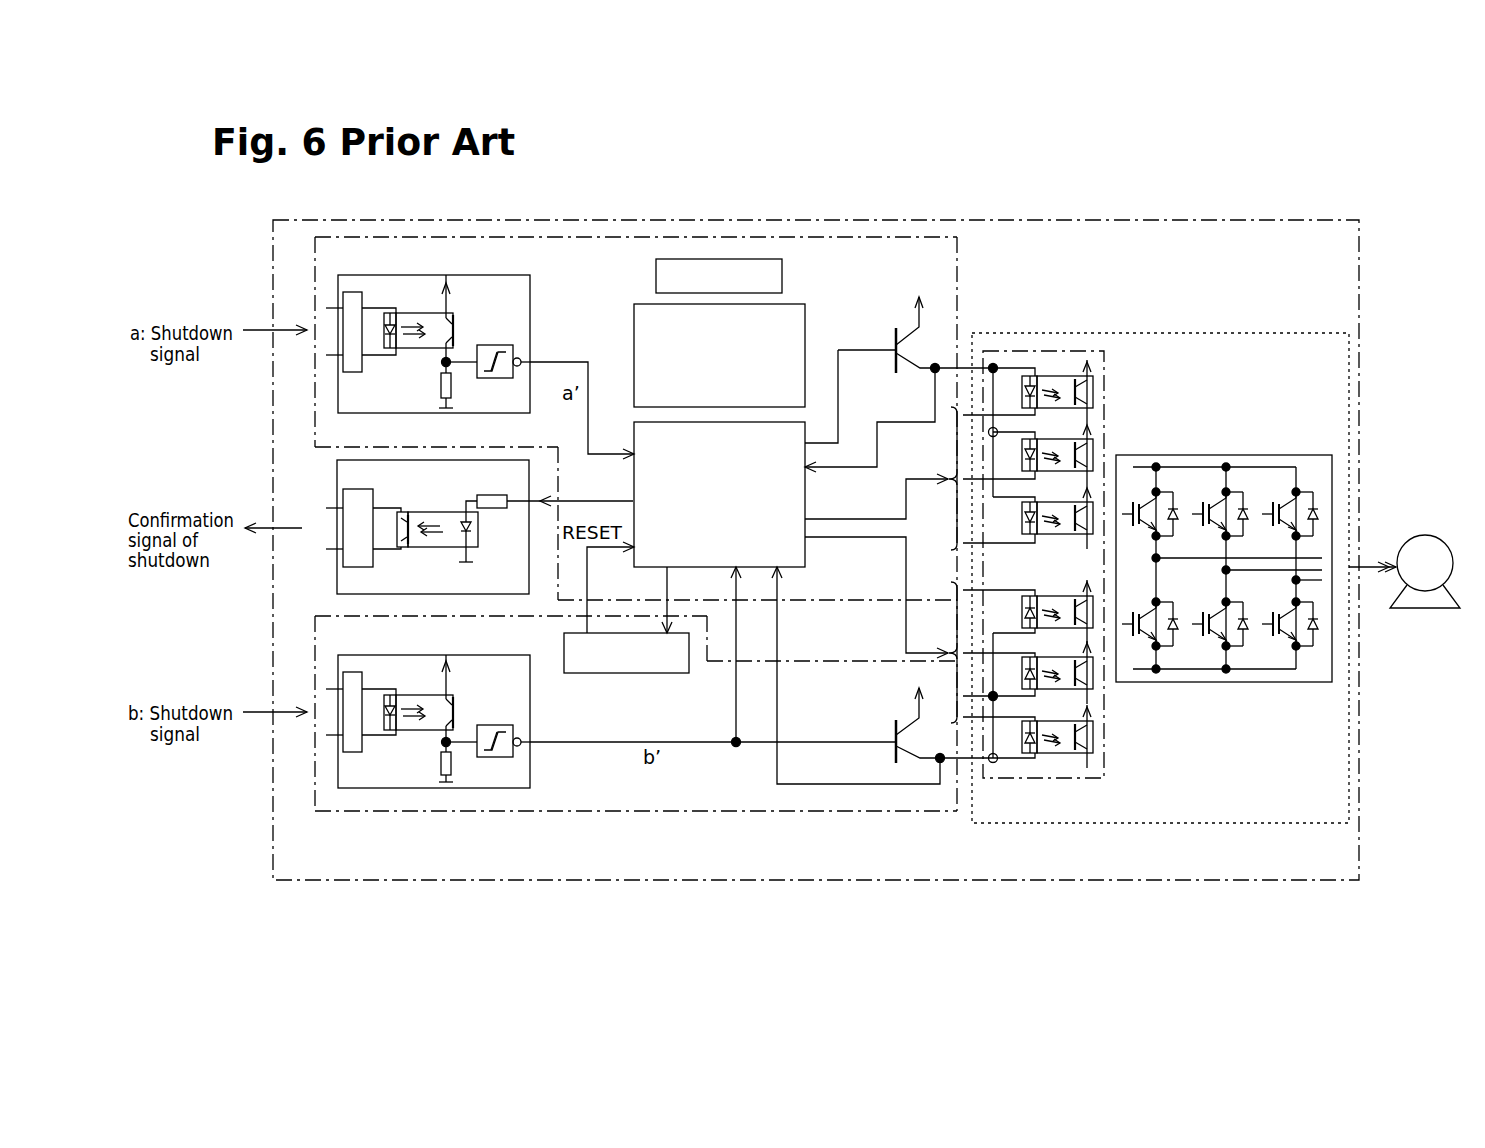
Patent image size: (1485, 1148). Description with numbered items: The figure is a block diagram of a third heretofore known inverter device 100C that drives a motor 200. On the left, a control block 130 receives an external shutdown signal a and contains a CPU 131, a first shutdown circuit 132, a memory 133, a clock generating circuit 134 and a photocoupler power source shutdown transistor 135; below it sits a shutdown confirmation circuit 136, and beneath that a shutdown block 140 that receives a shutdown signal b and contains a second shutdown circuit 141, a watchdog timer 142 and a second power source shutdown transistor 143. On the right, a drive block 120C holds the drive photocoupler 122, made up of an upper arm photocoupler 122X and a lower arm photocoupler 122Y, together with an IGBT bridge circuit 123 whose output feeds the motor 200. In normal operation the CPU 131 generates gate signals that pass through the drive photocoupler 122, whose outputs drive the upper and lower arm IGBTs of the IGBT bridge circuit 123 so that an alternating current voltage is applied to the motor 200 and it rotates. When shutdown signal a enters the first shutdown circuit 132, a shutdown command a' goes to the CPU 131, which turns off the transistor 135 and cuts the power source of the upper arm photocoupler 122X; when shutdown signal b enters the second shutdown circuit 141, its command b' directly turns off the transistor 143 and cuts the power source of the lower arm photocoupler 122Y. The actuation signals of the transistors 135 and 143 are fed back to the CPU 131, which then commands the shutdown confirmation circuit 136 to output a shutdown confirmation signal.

The inverter device 100C is at (962, 880).
The control block 130 is at (310, 420).
The CPU 131 is at (788, 548).
The first shutdown circuit 132 is at (505, 313).
The memory 133 is at (648, 345).
The clock generating circuit 134 is at (662, 280).
The photocoupler 122X power source shutdown transistor 135 is at (890, 338).
The shutdown confirmation circuit 136 is at (347, 580).
The shutdown block 140 is at (471, 811).
The second shutdown circuit 141 is at (515, 778).
The watchdog timer 142 is at (612, 672).
The photocoupler 122Y power source shutdown transistor 143 is at (890, 736).
The drive block 120C is at (1092, 825).
The drive photocoupler 122 is at (1064, 542).
The upper arm photocoupler 122X is at (1040, 360).
The lower arm photocoupler 122Y is at (1048, 762).
The IGBT bridge circuit 123 is at (1265, 455).
The motor 200 is at (1425, 536).